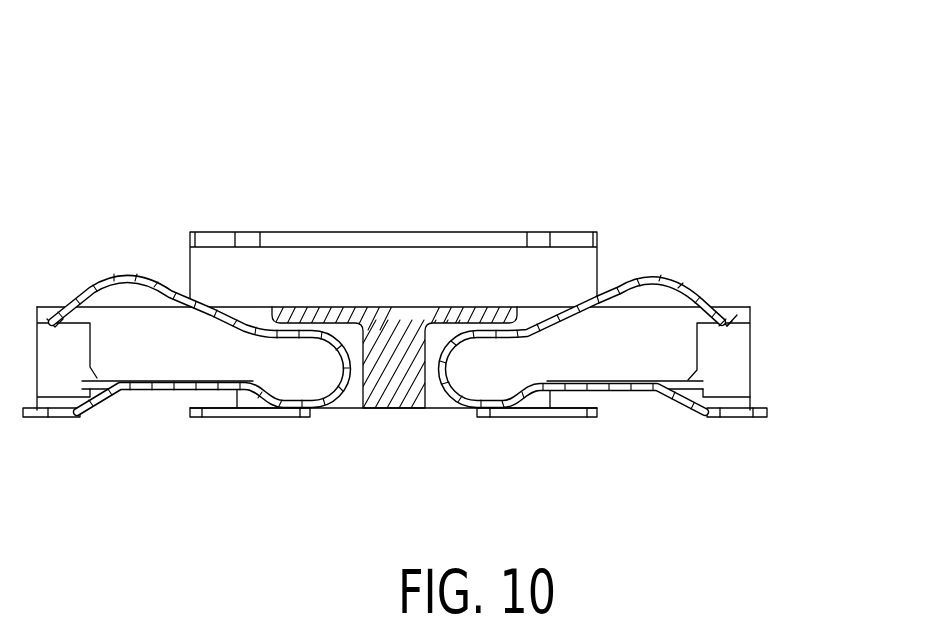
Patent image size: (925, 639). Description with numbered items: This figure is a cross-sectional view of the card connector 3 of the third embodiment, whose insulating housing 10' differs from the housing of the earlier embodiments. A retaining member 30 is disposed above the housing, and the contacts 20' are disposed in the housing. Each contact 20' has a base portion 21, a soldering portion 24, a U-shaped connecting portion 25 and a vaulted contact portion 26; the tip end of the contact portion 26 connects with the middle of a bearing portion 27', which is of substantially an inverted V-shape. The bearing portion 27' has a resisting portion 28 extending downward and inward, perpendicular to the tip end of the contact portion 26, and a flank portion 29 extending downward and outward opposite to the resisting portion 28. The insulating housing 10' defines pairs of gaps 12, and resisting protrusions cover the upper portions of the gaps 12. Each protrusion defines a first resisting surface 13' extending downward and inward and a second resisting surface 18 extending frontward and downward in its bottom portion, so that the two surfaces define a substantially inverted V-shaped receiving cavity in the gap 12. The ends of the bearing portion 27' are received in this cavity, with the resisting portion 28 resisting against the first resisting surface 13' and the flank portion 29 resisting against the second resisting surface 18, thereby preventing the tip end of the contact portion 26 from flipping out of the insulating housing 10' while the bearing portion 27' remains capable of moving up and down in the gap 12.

The card connector 3 is at (83, 47).
The insulating housing 10' is at (317, 396).
The gap 12 is at (717, 377).
The first resisting surface 13' is at (689, 256).
The second resisting surface 18 is at (745, 323).
The contact 20' is at (186, 274).
The base portion 21 is at (578, 383).
The soldering portion 24 is at (742, 413).
The U-shaped connecting portion 25 is at (426, 408).
The contact portion 26 is at (660, 278).
The bearing portion 27' is at (808, 231).
The resisting portion 28 is at (723, 320).
The flank portion 29 is at (730, 316).
The retaining member 30 is at (348, 270).